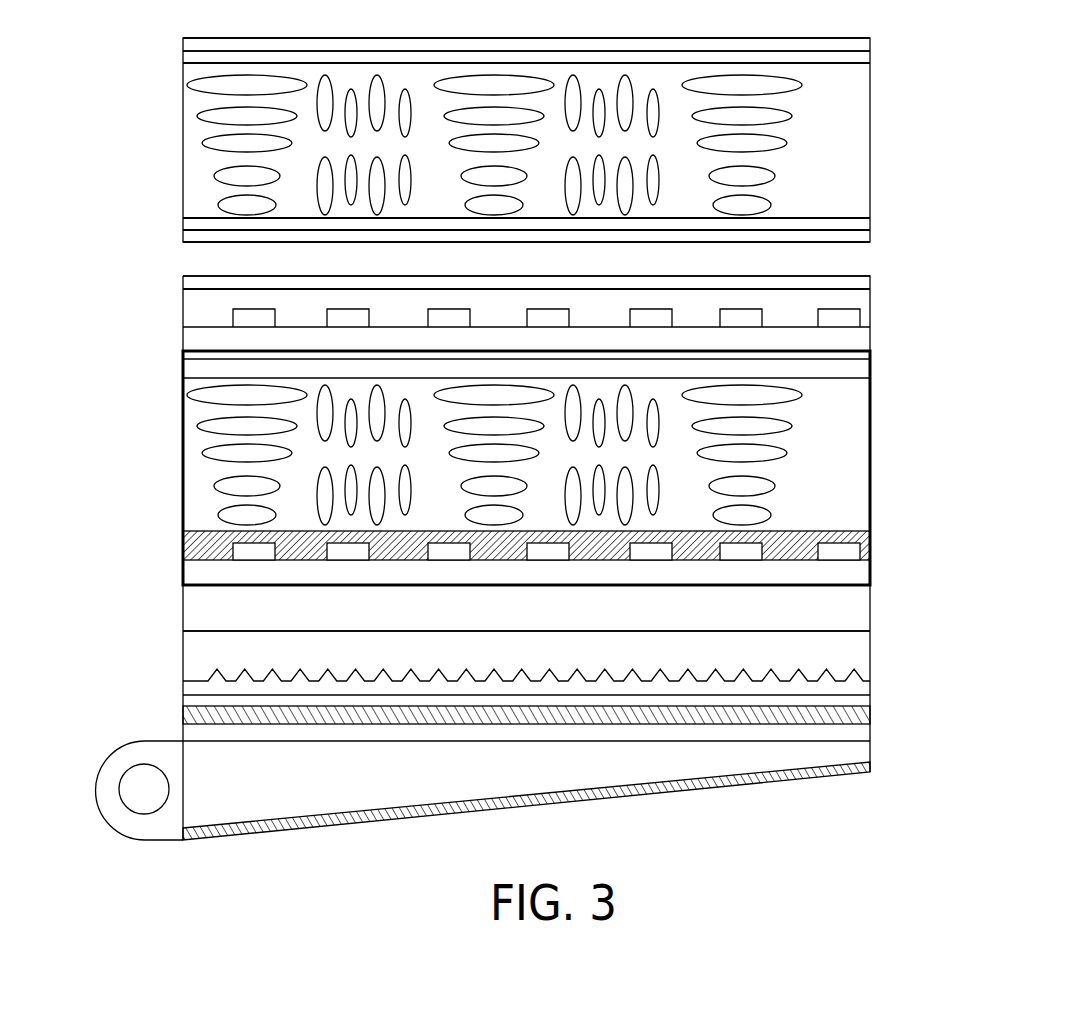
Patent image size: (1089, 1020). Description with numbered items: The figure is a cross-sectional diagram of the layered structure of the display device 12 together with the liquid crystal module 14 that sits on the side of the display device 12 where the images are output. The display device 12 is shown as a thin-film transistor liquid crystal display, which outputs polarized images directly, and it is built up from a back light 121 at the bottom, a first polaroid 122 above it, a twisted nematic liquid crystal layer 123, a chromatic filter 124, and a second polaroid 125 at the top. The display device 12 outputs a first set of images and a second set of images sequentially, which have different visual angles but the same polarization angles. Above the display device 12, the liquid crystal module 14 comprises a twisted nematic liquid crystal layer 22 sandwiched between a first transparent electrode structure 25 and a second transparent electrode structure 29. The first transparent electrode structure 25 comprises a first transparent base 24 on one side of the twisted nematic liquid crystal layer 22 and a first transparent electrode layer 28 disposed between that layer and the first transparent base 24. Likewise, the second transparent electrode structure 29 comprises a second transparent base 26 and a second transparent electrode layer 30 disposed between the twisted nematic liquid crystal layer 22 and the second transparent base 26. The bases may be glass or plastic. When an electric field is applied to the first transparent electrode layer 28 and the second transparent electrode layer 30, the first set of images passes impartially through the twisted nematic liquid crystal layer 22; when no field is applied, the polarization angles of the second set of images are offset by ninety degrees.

The display device 12 is at (1001, 257).
The back light 121 is at (875, 708).
The first polaroid 122 is at (872, 607).
The twisted nematic liquid crystal layer 123 is at (872, 430).
The chromatic filter 124 is at (872, 307).
The second polaroid 125 is at (872, 279).
The liquid crystal module 14 is at (990, 250).
The twisted nematic liquid crystal layer 22 is at (862, 128).
The first transparent base 24 is at (872, 47).
The first transparent electrode structure 25 is at (937, 32).
The second transparent base 26 is at (872, 235).
The first transparent electrode layer 28 is at (872, 60).
The second transparent electrode structure 29 is at (937, 182).
The second transparent electrode layer 30 is at (872, 218).